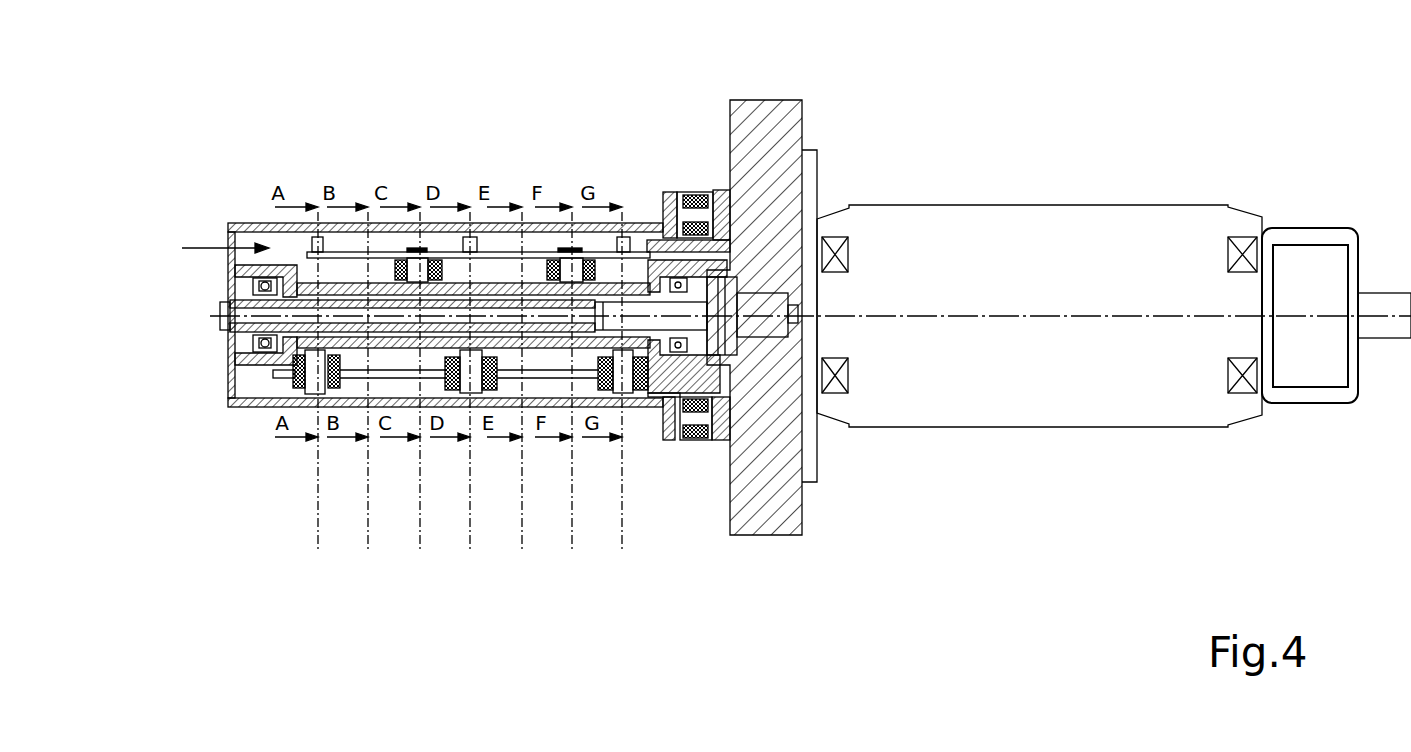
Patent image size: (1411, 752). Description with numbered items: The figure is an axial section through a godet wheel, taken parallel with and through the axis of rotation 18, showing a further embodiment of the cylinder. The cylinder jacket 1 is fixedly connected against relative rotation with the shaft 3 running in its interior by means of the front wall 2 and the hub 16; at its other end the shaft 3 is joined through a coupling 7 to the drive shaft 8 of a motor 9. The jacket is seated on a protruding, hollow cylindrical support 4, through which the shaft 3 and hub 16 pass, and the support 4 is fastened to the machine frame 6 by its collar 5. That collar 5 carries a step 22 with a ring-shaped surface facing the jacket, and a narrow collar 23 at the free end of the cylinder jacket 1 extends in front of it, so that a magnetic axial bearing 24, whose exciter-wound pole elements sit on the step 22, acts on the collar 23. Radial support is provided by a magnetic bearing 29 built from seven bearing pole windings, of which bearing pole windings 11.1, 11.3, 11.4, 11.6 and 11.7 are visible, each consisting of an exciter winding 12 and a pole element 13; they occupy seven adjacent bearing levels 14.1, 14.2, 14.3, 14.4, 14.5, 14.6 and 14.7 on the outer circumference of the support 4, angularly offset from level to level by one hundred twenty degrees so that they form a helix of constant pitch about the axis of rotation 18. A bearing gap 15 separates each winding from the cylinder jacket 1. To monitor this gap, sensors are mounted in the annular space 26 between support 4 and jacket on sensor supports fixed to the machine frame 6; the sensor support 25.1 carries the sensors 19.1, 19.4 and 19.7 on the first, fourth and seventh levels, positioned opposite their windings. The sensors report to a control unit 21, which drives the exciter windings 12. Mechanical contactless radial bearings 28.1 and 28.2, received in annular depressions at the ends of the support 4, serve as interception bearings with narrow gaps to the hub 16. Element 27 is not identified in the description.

The cylinder jacket 1 is at (248, 234).
The front wall 2 is at (226, 234).
The shaft 3 is at (668, 257).
The support 4 is at (341, 272).
The collar 5 is at (718, 192).
The machine frame 6 is at (775, 147).
The coupling 7 is at (763, 210).
The drive shaft 8 is at (804, 280).
The motor 9 is at (968, 243).
The bearing pole winding 11.1 is at (360, 382).
The bearing pole winding 11.3 is at (422, 246).
The bearing pole winding 11.4 is at (518, 378).
The bearing pole winding 11.6 is at (561, 246).
The bearing pole winding 11.7 is at (577, 380).
The exciter winding 12 is at (320, 393).
The pole element 13 is at (322, 400).
The bearing level 14.1 is at (317, 550).
The bearing level 14.2 is at (367, 550).
The bearing level 14.3 is at (419, 550).
The bearing level 14.4 is at (469, 550).
The bearing level 14.5 is at (521, 550).
The bearing level 14.6 is at (571, 550).
The bearing level 14.7 is at (621, 550).
The bearing gap 15 is at (302, 400).
The hub 16 is at (297, 283).
The axis of rotation 18 is at (978, 378).
The sensor 19.1 is at (318, 238).
The sensor 19.4 is at (477, 238).
The sensor 19.7 is at (637, 238).
The control unit 21 is at (1310, 358).
The step 22 is at (719, 441).
The collar 23 is at (668, 440).
The axial bearing 24 is at (695, 441).
The sensor support 25.1 is at (376, 253).
The annular space 26 is at (608, 240).
The coil 27 is at (698, 197).
The radial bearing 28.1 is at (245, 343).
The radial bearing 28.2 is at (648, 400).
The magnetic bearing 29 is at (182, 250).